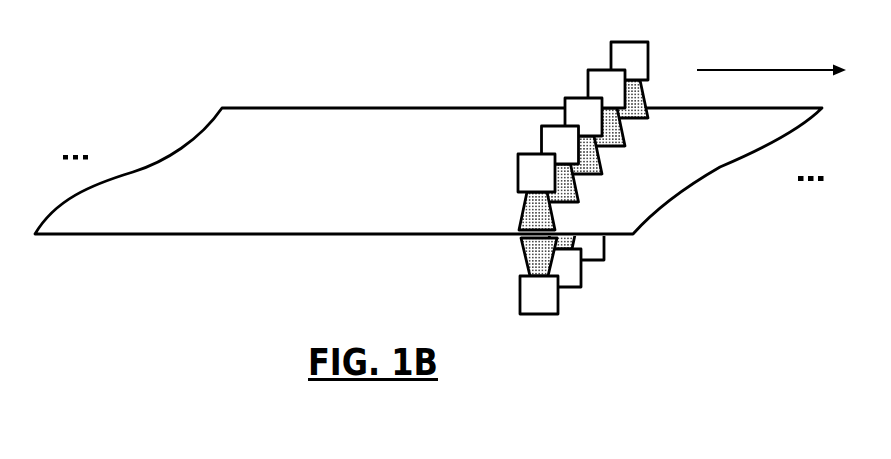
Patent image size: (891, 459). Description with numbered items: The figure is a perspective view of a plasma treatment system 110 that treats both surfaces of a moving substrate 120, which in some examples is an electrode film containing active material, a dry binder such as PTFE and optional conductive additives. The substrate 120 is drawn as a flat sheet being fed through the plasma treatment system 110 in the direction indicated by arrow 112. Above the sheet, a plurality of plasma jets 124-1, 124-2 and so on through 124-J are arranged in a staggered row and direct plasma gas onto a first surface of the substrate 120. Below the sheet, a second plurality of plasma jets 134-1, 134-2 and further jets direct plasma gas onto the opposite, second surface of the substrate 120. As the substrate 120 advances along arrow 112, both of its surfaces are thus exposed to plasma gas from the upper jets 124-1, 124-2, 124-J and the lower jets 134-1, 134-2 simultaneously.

The plasma treatment system 110 is at (320, 36).
The arrow 112 is at (784, 70).
The substrate 120 is at (322, 112).
The plasma jet 124-1 is at (524, 153).
The plasma jet 124-2 is at (552, 126).
The plasma jet 124-J is at (632, 42).
The plasma jet 134-1 is at (558, 306).
The plasma jet 134-2 is at (582, 273).